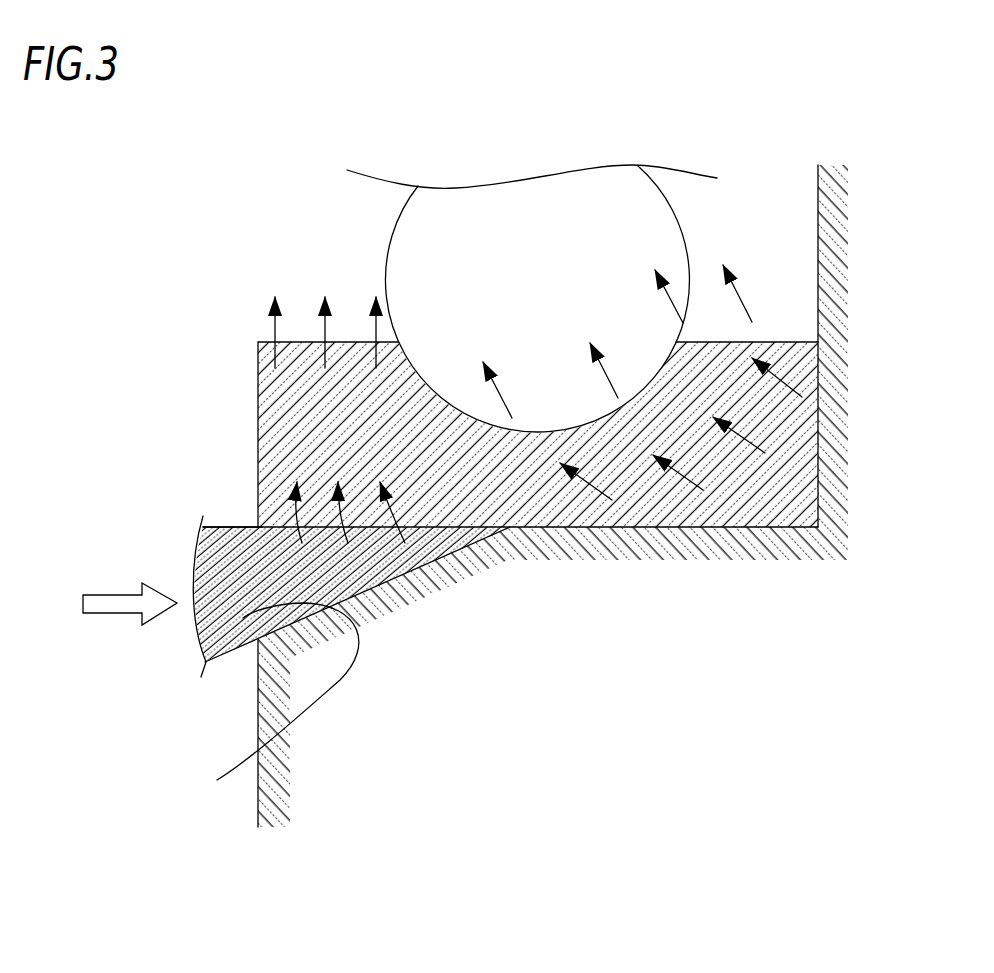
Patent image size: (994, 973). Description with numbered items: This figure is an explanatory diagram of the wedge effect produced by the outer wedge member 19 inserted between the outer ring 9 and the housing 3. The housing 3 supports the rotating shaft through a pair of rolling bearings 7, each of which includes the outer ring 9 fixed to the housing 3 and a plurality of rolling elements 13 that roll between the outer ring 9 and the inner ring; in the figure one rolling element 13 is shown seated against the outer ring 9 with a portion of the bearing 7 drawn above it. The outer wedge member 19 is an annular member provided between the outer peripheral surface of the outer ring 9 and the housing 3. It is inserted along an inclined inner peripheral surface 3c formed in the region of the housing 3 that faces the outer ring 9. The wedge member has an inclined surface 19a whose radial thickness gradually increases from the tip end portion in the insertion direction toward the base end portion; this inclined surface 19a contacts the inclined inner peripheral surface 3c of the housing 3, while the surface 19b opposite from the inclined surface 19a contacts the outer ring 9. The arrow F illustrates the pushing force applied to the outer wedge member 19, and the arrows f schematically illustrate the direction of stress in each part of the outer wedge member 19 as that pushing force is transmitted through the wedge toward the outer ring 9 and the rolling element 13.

The housing 3 is at (257, 722).
The inclined inner peripheral surface 3c is at (205, 660).
The rolling bearing 7 is at (297, 181).
The outer ring 9 is at (260, 390).
The rolling element 13 is at (556, 229).
The outer wedge member 19 is at (190, 542).
The inclined surface 19a is at (265, 707).
The surface opposite from the inclined surface 19b is at (240, 524).
The pushing force F is at (110, 593).
The direction of stress f is at (273, 327).